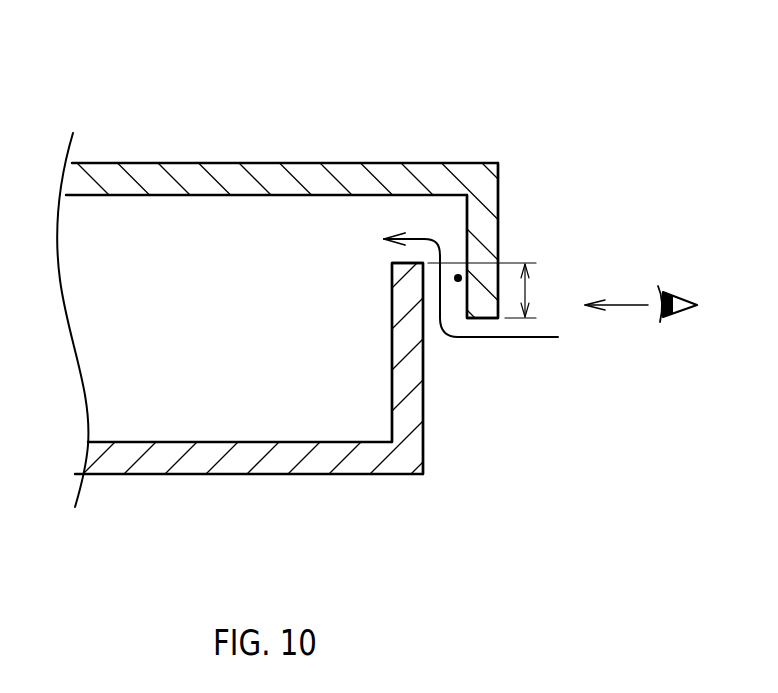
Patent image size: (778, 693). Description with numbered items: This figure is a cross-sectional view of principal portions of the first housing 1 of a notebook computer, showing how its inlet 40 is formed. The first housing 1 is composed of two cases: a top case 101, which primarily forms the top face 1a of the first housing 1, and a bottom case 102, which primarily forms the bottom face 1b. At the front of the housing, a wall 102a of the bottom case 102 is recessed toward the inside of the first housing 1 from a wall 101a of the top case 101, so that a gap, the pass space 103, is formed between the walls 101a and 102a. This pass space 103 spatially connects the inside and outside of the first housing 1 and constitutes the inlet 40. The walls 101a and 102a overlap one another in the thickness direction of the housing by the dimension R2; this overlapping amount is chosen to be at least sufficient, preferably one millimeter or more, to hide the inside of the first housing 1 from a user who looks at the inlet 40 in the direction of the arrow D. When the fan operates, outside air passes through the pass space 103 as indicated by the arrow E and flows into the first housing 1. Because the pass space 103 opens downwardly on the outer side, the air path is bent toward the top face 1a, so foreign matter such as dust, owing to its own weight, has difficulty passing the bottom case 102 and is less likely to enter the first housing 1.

The first housing 1 is at (320, 284).
The top face 1a is at (325, 202).
The bottom face 1b is at (292, 410).
The top case 101 is at (325, 240).
The wall of the top case 101a is at (498, 236).
The bottom case 102 is at (292, 396).
The wall of the bottom case 102a is at (413, 423).
The pass space 103 is at (457, 276).
The inlet 40 is at (518, 400).
The arrow indicating air flow E is at (493, 338).
The arrow indicating viewing direction D is at (624, 304).
The overlapping dimension R2 is at (530, 291).